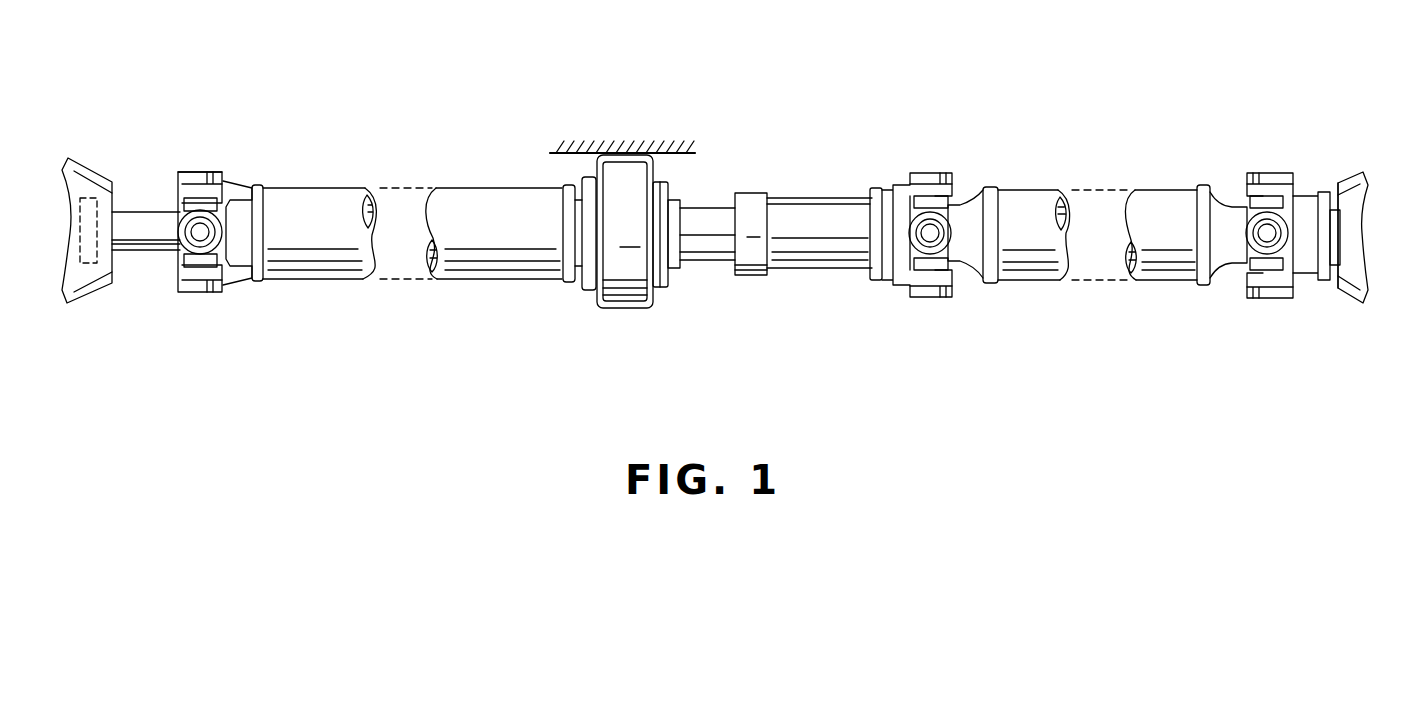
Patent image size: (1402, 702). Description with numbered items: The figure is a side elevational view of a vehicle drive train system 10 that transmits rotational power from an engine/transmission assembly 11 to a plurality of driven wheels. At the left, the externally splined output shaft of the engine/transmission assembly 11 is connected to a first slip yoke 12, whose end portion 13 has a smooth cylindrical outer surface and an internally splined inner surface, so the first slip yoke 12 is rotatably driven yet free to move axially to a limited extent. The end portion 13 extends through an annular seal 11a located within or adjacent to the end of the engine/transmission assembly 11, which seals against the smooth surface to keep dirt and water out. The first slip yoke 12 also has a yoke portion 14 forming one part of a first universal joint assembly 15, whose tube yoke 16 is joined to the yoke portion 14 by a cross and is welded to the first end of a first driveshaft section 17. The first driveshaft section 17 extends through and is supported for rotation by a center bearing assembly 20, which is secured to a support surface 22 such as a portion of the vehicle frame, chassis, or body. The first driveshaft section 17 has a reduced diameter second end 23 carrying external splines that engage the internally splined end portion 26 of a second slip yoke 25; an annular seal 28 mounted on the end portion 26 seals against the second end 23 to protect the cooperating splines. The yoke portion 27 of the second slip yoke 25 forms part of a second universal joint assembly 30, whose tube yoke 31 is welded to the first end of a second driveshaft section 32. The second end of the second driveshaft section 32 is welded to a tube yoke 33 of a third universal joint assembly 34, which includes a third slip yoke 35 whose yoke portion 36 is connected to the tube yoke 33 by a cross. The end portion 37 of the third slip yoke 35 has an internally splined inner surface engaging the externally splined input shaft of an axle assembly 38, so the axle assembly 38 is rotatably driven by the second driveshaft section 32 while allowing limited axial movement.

The drive train system 10 is at (878, 82).
The engine/transmission assembly 11 is at (90, 287).
The annular seal 11a is at (93, 165).
The first slip yoke 12 is at (141, 293).
The end portion 13 is at (138, 212).
The yoke portion 14 is at (165, 244).
The first universal joint assembly 15 is at (201, 157).
The tube yoke 16 is at (238, 186).
The first driveshaft section 17 is at (322, 268).
The center bearing assembly 20 is at (583, 304).
The support surface 22 is at (557, 167).
The second end 23 is at (710, 251).
The second slip yoke 25 is at (804, 194).
The end portion 26 is at (793, 268).
The yoke portion 27 is at (893, 184).
The annular seal 28 is at (749, 190).
The second universal joint assembly 30 is at (921, 322).
The tube yoke 31 is at (965, 254).
The second driveshaft section 32 is at (1030, 190).
The tube yoke 33 is at (1232, 256).
The third universal joint assembly 34 is at (1276, 322).
The third slip yoke 35 is at (1256, 169).
The yoke portion 36 is at (1322, 190).
The end portion 37 is at (1333, 284).
The axle assembly 38 is at (1353, 176).